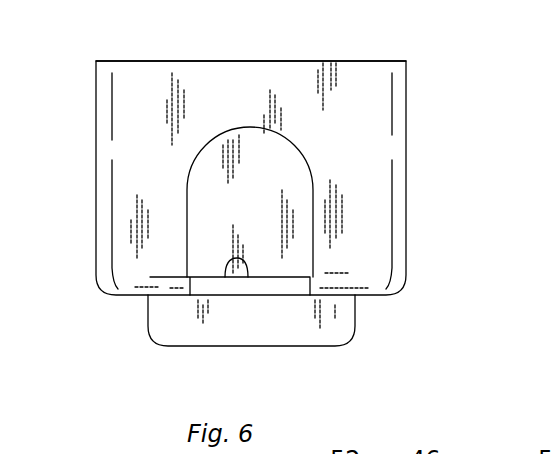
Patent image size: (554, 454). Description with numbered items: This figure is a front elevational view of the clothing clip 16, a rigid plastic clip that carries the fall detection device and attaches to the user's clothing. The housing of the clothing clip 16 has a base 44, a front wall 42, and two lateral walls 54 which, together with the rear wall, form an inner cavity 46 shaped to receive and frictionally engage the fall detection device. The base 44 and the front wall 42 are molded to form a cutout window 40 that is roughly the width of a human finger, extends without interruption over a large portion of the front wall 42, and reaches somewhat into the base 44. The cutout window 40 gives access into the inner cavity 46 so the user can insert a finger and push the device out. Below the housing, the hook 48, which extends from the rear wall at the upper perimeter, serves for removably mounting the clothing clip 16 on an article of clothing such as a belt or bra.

The clothing clip 16 is at (96, 354).
The cutout window 40 is at (313, 231).
The front wall 42 is at (362, 143).
The base 44 is at (225, 277).
The inner cavity 46 is at (293, 47).
The hook 48 is at (347, 330).
The lateral walls 54 is at (96, 172).